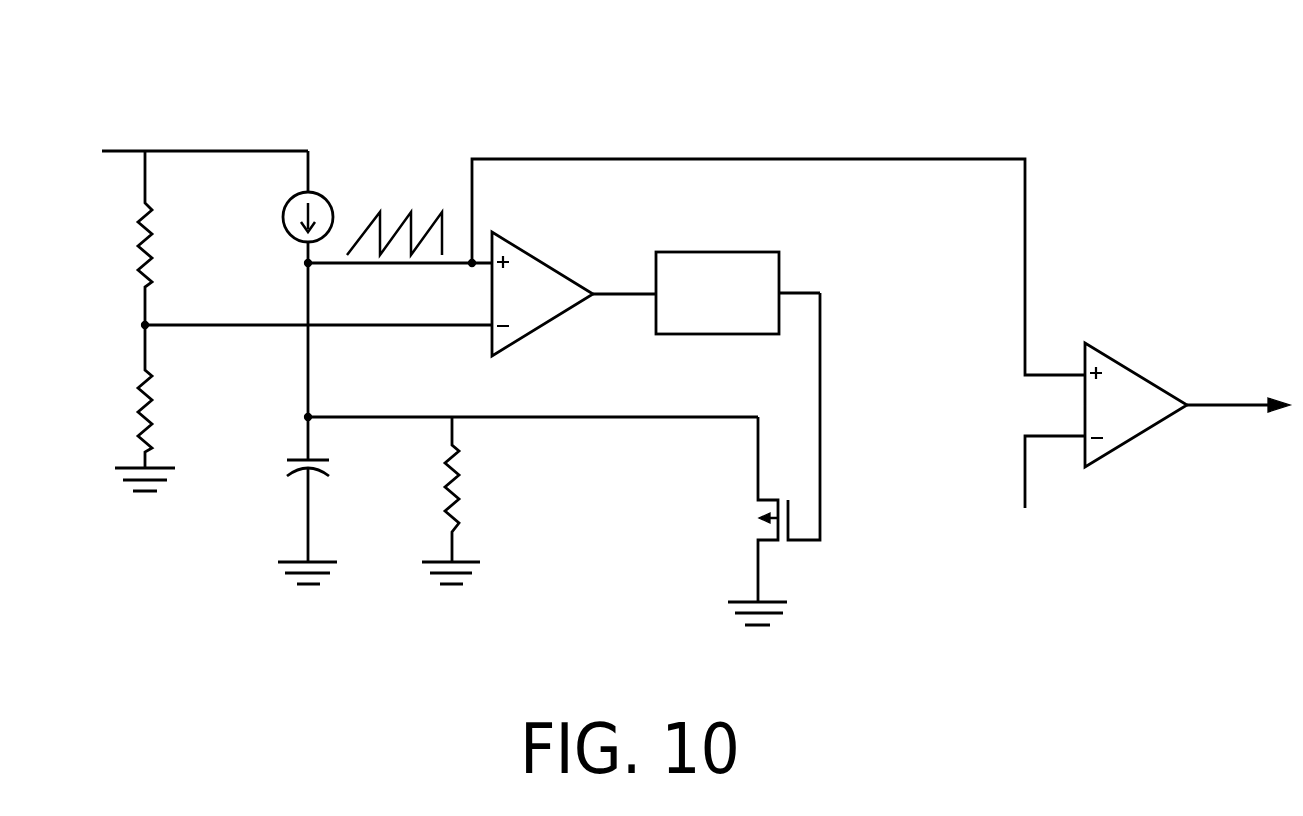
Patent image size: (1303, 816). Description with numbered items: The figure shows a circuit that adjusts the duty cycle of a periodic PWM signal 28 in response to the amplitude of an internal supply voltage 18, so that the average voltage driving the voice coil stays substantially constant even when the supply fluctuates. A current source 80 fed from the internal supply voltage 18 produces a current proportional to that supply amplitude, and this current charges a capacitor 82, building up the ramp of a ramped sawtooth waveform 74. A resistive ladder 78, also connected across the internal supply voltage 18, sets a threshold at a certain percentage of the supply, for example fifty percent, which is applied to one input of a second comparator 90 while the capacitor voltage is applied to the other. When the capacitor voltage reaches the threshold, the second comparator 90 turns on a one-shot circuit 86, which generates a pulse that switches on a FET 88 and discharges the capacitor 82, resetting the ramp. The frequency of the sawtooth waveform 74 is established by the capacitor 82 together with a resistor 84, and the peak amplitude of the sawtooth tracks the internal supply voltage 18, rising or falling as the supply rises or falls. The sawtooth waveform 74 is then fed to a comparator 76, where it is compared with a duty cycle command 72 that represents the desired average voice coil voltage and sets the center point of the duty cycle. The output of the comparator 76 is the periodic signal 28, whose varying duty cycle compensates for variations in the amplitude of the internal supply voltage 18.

The internal supply voltage 18 is at (115, 147).
The resistive ladder 78 is at (132, 202).
The current source 80 is at (283, 215).
The capacitor 82 is at (274, 463).
The resistor 84 is at (482, 491).
The one-shot circuit 86 is at (717, 252).
The FET 88 is at (745, 516).
The second comparator 90 is at (532, 250).
The ramped sawtooth waveform 74 is at (1025, 247).
The comparator 76 is at (1130, 363).
The duty cycle command 72 is at (1023, 468).
The periodic signal 28 is at (1222, 408).